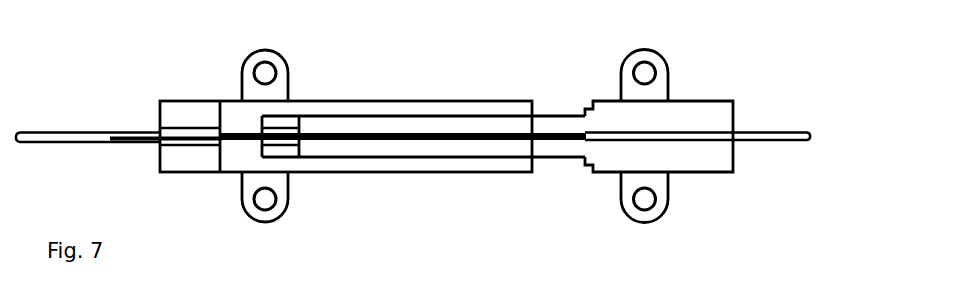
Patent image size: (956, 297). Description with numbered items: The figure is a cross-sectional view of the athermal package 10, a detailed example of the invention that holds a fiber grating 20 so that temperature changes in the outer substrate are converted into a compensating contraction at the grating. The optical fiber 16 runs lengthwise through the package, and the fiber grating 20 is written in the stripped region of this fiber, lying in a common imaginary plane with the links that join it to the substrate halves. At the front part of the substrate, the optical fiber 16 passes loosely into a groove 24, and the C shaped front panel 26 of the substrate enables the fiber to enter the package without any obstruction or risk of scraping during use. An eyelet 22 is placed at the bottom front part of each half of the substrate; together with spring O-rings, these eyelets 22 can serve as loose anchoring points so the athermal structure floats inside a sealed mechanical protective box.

The athermal package 10 is at (98, 45).
The optical fiber 16 is at (765, 130).
The fiber grating 20 is at (401, 140).
The eyelet 22 is at (285, 57).
The groove 24 is at (150, 147).
The C shaped front panel 26 is at (454, 97).